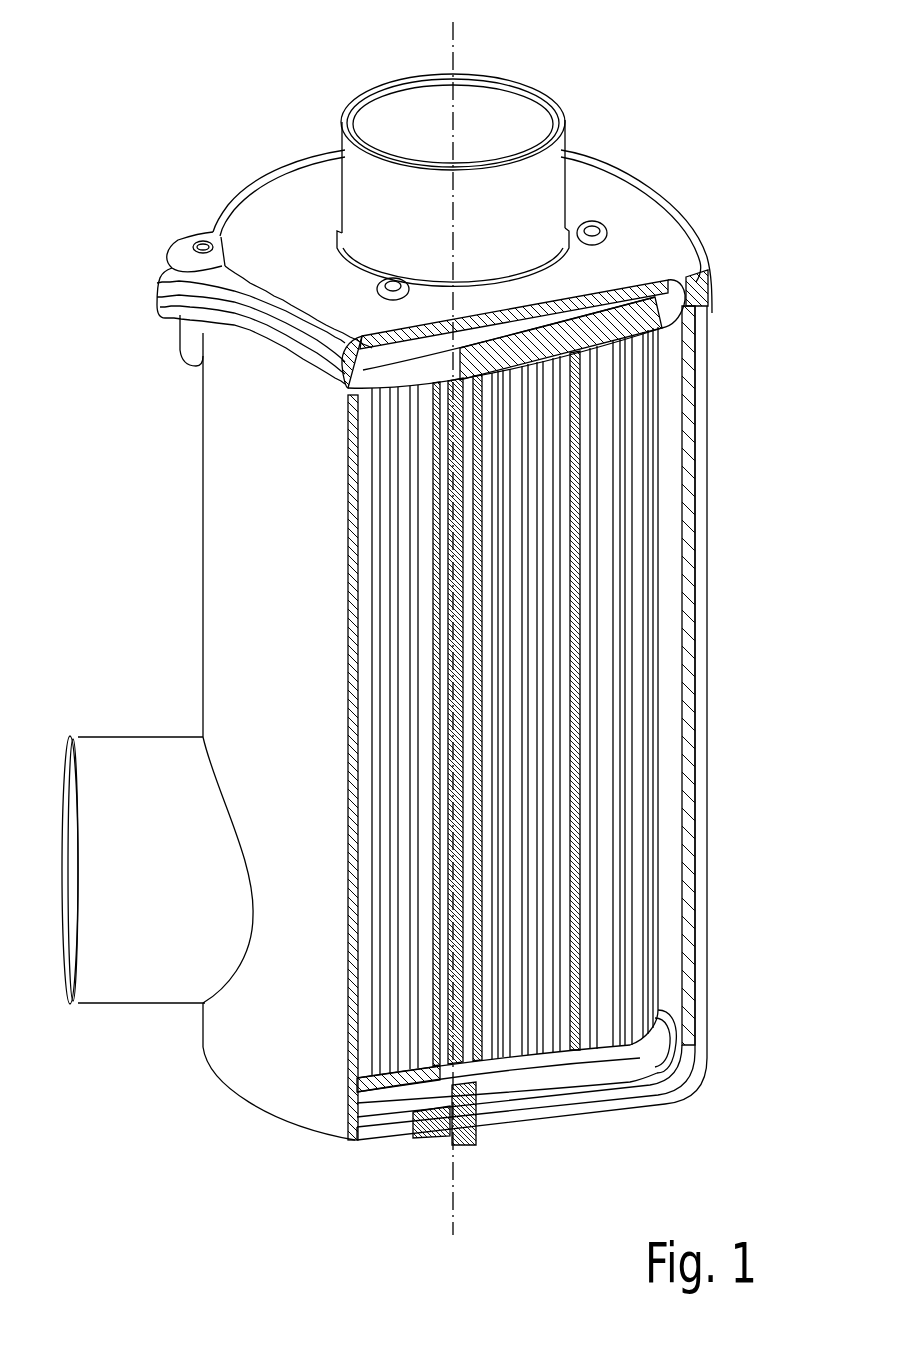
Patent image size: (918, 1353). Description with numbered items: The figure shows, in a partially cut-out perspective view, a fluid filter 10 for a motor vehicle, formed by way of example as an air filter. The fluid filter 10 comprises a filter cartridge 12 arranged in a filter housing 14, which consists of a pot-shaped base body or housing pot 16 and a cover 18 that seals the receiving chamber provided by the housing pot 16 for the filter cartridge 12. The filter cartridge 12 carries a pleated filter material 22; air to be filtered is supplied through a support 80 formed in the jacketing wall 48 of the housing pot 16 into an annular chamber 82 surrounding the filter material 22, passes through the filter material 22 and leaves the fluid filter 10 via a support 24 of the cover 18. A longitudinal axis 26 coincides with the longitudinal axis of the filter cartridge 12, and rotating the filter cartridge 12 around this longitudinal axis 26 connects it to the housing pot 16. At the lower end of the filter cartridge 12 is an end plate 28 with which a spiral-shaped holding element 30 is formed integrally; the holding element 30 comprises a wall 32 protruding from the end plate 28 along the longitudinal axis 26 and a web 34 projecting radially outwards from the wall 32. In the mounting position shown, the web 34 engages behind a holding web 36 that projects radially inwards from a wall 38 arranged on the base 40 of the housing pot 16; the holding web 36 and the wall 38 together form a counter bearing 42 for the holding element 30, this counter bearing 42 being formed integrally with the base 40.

The fluid filter 10 is at (202, 166).
The filter cartridge 12 is at (554, 768).
The filter housing 14 is at (716, 312).
The housing pot 16 is at (473, 771).
The cover 18 is at (647, 242).
The filter material 22 is at (640, 552).
The support 24 is at (410, 130).
The longitudinal axis 26 is at (455, 52).
The end plate 28 is at (508, 1085).
The holding element 30 is at (466, 1140).
The wall 32 is at (476, 1135).
The web 34 is at (440, 1142).
The holding web 36 is at (430, 1080).
The wall 38 is at (415, 1145).
The base 40 is at (597, 1105).
The counter bearing 42 is at (402, 1150).
The jacketing wall 48 is at (690, 662).
The support 80 is at (137, 760).
The annular chamber 82 is at (668, 792).